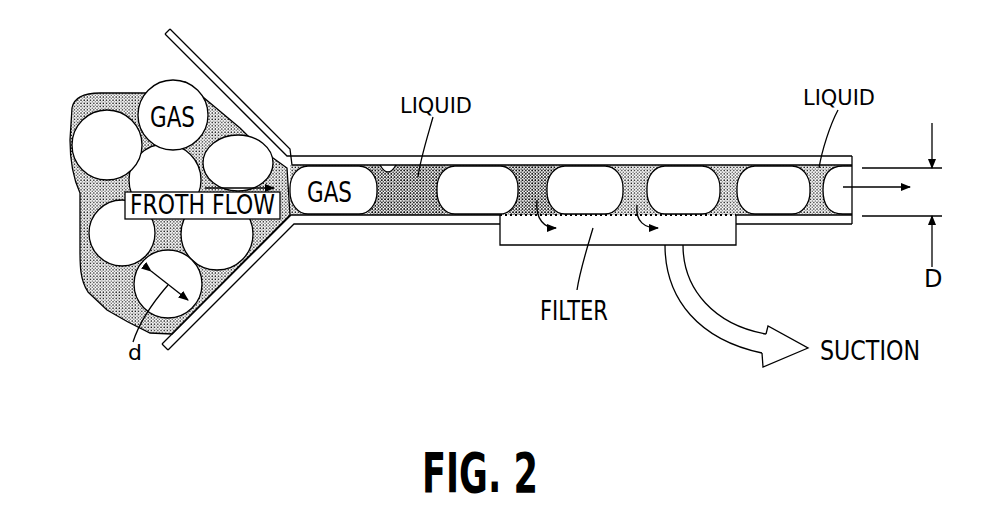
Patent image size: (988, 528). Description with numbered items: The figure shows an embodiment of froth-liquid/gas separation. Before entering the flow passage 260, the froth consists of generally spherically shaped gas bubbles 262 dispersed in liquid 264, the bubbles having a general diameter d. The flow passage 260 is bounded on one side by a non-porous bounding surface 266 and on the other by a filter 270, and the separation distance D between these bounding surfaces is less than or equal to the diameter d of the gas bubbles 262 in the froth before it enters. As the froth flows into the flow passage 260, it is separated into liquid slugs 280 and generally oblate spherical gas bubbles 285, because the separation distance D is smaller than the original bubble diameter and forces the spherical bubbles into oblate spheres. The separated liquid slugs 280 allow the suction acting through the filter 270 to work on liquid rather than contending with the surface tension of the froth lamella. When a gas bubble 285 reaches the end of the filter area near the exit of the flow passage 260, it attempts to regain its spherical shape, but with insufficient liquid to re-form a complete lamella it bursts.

The flow passage 260 is at (539, 204).
The gas bubbles 262 is at (110, 238).
The liquid 264 is at (218, 285).
The non-porous bounding surface 266 is at (388, 172).
The filter 270 is at (724, 233).
The liquid slugs 280 is at (402, 203).
The oblate spherical gas bubbles 285 is at (477, 203).